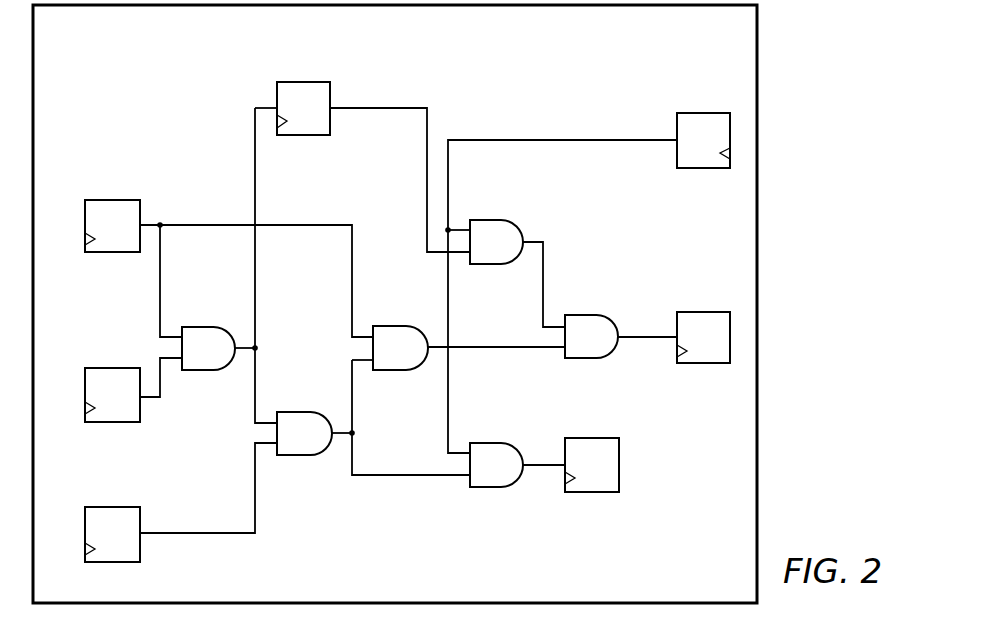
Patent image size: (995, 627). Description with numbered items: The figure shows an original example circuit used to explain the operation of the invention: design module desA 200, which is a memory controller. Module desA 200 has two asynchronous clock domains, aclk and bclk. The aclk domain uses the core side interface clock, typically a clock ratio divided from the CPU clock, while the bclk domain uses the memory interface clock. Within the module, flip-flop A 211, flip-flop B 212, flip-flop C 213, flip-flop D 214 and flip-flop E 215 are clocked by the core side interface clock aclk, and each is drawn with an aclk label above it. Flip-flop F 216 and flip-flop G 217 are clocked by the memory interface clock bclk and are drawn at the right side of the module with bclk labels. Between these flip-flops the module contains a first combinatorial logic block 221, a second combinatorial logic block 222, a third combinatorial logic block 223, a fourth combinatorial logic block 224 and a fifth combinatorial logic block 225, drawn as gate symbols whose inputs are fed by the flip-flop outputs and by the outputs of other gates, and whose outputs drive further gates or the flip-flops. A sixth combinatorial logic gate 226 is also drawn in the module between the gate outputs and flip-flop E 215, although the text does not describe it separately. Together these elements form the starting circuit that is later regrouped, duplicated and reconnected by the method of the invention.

The design module desA 200 is at (789, 137).
The flip-flop A 211 is at (112, 252).
The flip-flop B 212 is at (140, 410).
The flip-flop C 213 is at (140, 548).
The flip-flop D 214 is at (303, 135).
The flip-flop E 215 is at (590, 492).
The flip-flop F 216 is at (705, 168).
The flip-flop G 217 is at (703, 363).
The combinatorial logic c1 221 is at (207, 327).
The combinatorial logic c2 222 is at (303, 455).
The combinatorial logic c3 223 is at (402, 370).
The combinatorial logic c4 224 is at (497, 220).
The combinatorial logic c5 225 is at (588, 315).
The AND gate c6 226 is at (497, 487).